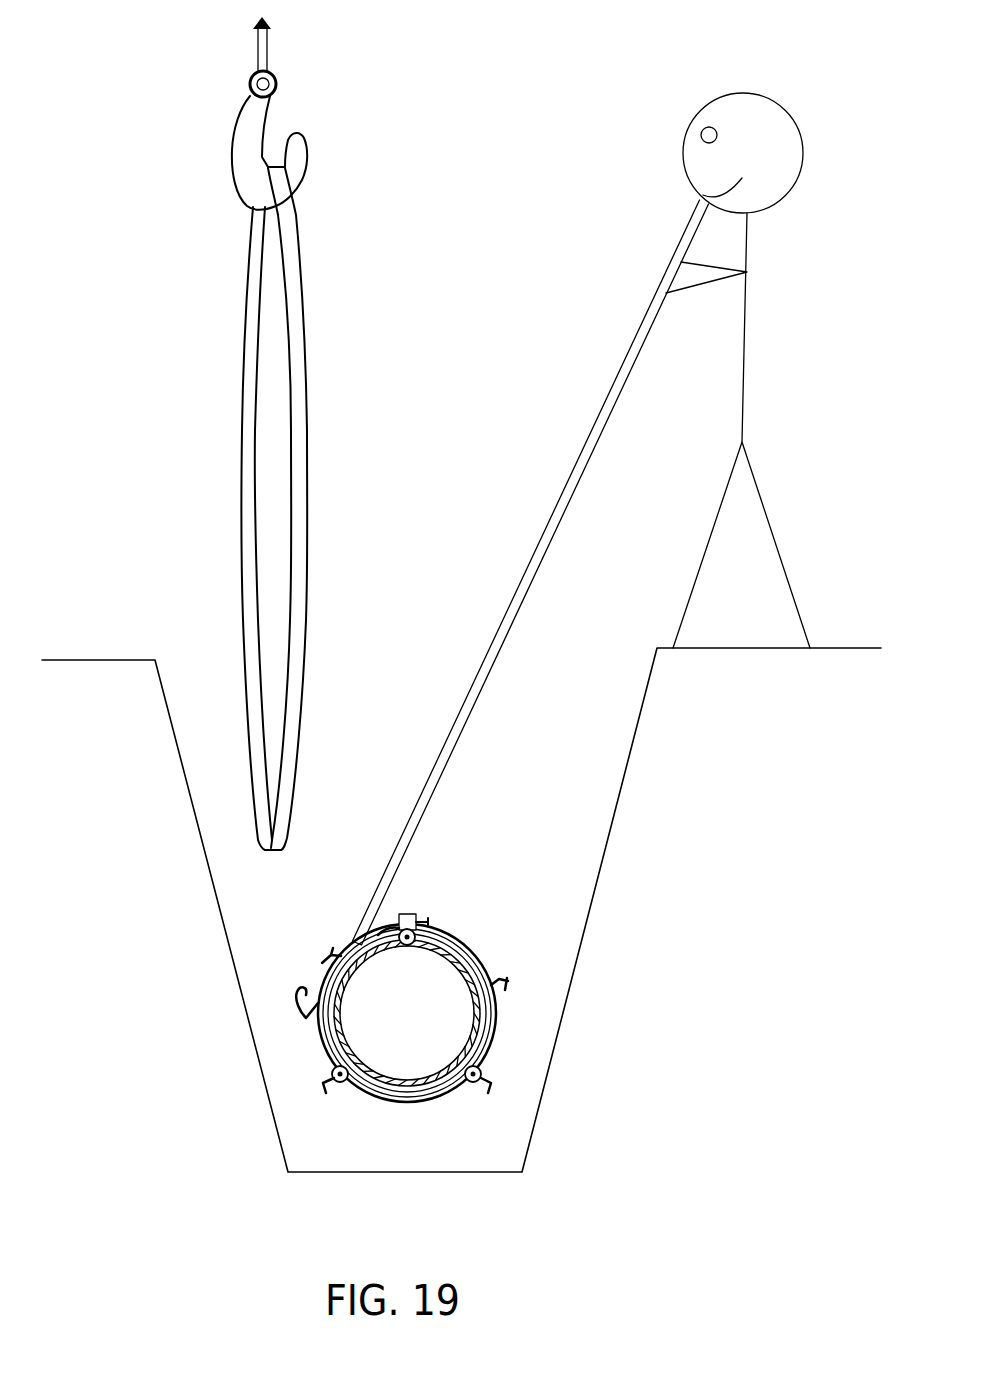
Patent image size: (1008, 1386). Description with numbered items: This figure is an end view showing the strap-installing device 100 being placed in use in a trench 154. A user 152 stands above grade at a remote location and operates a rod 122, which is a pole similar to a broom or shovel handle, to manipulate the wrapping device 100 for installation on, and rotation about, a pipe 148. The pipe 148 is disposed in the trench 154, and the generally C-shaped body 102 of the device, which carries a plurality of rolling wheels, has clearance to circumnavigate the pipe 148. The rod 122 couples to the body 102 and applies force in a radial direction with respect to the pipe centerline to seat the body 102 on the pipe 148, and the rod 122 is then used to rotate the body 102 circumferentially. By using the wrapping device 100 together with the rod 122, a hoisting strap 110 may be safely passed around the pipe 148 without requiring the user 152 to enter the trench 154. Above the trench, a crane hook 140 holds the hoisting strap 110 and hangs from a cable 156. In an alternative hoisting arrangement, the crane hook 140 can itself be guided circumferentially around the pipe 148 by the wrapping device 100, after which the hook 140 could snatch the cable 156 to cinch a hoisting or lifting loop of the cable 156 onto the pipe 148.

The strap-installing device 100 is at (414, 340).
The body 102 is at (468, 957).
The hoisting strap 110 is at (247, 425).
The rod 122 is at (545, 539).
The crane hook 140 is at (238, 165).
The pipe 148 is at (388, 1100).
The user 152 is at (748, 343).
The trench 154 is at (570, 991).
The cable 156 is at (258, 48).